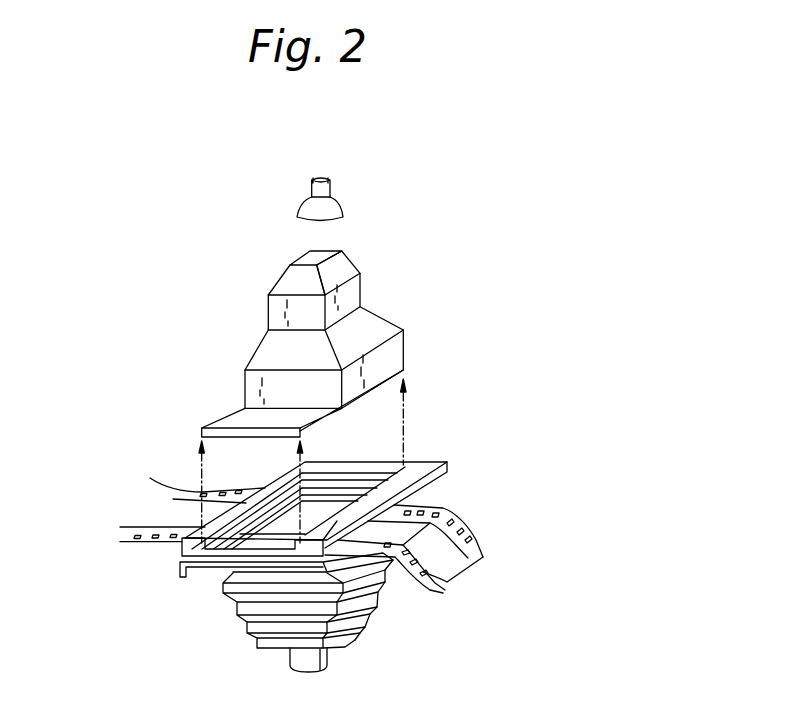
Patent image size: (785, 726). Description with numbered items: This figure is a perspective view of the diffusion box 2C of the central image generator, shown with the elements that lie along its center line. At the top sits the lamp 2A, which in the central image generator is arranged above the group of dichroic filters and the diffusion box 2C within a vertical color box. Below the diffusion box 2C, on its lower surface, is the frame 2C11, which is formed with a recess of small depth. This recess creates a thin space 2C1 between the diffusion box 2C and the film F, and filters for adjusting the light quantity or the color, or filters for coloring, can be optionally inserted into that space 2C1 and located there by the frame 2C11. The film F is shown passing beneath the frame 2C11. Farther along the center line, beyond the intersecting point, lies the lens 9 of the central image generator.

The lamp 2A is at (340, 208).
The diffusion box 2C is at (381, 330).
The frame 2C11 is at (446, 468).
The space 2C1 is at (217, 557).
The film F is at (462, 558).
The lens 9 is at (327, 657).